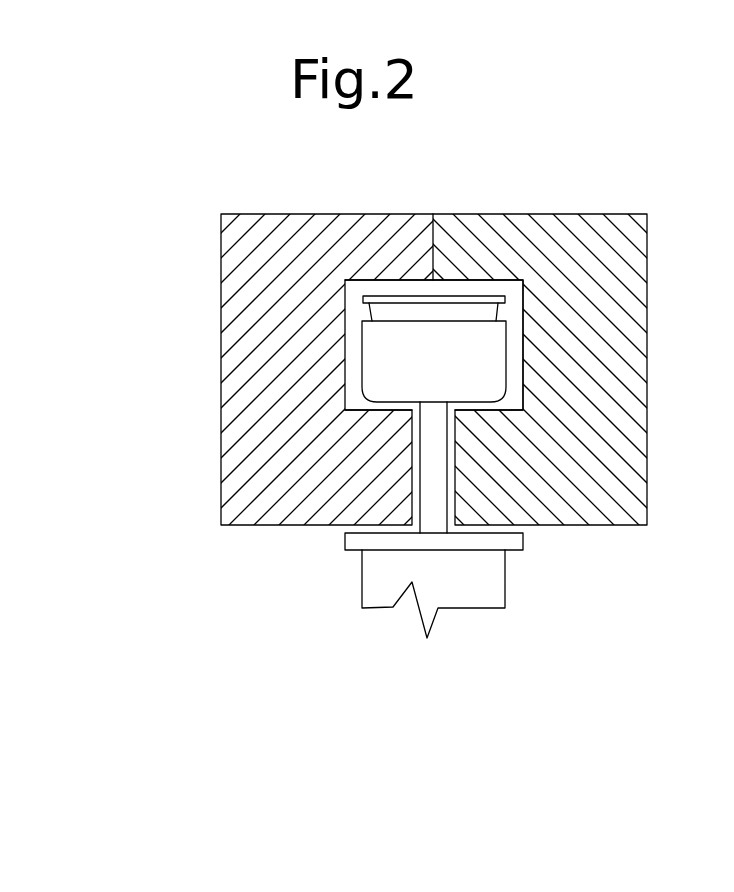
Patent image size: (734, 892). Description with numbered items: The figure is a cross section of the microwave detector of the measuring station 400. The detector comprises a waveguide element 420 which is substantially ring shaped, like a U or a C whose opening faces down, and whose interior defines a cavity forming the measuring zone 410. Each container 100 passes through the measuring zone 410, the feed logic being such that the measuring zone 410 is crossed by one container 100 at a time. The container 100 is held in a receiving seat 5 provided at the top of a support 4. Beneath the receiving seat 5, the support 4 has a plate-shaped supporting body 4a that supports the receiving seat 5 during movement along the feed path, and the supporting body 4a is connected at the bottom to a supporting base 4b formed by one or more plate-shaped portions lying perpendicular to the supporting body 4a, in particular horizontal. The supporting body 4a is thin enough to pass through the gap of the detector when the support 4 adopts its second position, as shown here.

The measuring station 400 is at (203, 248).
The measuring zone 410 is at (480, 287).
The waveguide element 420 is at (632, 431).
The container 100 is at (474, 310).
The receiving seat 5 is at (479, 357).
The support 4 is at (449, 441).
The supporting body 4a is at (430, 465).
The supporting base 4b is at (349, 570).